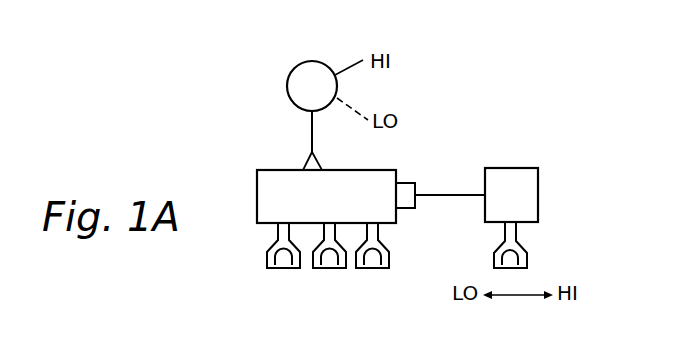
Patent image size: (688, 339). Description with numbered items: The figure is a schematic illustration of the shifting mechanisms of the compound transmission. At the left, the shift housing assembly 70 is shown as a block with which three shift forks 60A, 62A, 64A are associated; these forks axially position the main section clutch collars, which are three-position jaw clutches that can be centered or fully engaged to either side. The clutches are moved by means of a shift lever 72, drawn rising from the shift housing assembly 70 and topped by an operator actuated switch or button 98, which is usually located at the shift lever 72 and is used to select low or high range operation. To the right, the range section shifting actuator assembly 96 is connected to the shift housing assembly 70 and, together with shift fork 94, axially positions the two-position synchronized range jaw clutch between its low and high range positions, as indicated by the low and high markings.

The shift housing assembly 70 is at (276, 192).
The shift lever 72 is at (312, 113).
The operator actuated switch or button 98 is at (345, 62).
The shift fork 60A is at (268, 246).
The shift fork 62A is at (336, 243).
The shift fork 64A is at (378, 241).
The range section shifting actuator assembly 96 is at (522, 178).
The shift fork 94 is at (517, 237).